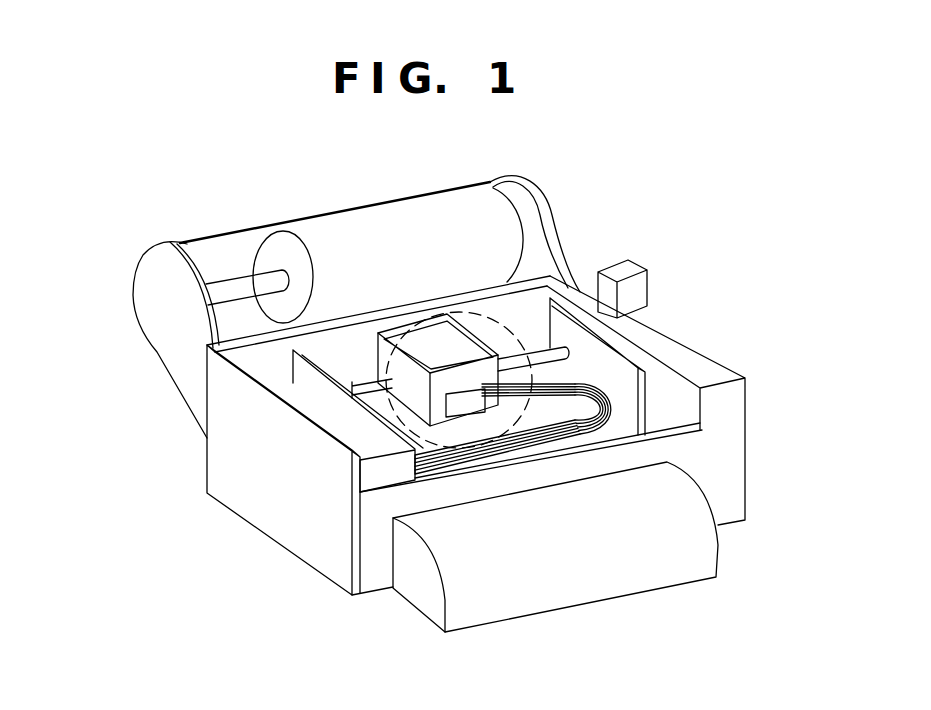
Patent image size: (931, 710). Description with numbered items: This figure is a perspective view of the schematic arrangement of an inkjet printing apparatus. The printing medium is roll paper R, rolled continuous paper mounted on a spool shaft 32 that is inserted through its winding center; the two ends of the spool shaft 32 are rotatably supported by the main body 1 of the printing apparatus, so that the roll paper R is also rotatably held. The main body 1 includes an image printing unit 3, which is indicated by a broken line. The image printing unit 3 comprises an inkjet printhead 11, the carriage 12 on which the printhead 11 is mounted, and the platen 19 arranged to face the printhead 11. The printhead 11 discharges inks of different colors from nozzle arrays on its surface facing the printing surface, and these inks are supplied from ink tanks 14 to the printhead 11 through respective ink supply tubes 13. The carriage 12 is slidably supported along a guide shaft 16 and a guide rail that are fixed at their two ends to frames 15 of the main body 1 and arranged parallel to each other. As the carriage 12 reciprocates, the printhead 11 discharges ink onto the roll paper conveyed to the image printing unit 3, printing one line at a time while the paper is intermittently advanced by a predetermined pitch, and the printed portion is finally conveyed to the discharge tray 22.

The main body 1 is at (136, 236).
The roll paper R is at (330, 238).
The spool shaft 32 is at (247, 287).
The inkjet printhead 11 is at (445, 357).
The carriage 12 is at (365, 442).
The ink supply tubes 13 is at (605, 425).
The ink tanks 14 is at (337, 448).
The frames 15 is at (572, 330).
The guide shaft 16 is at (567, 352).
The platen 19 is at (503, 390).
The discharge tray 22 is at (543, 587).
The image printing unit 3 is at (437, 447).